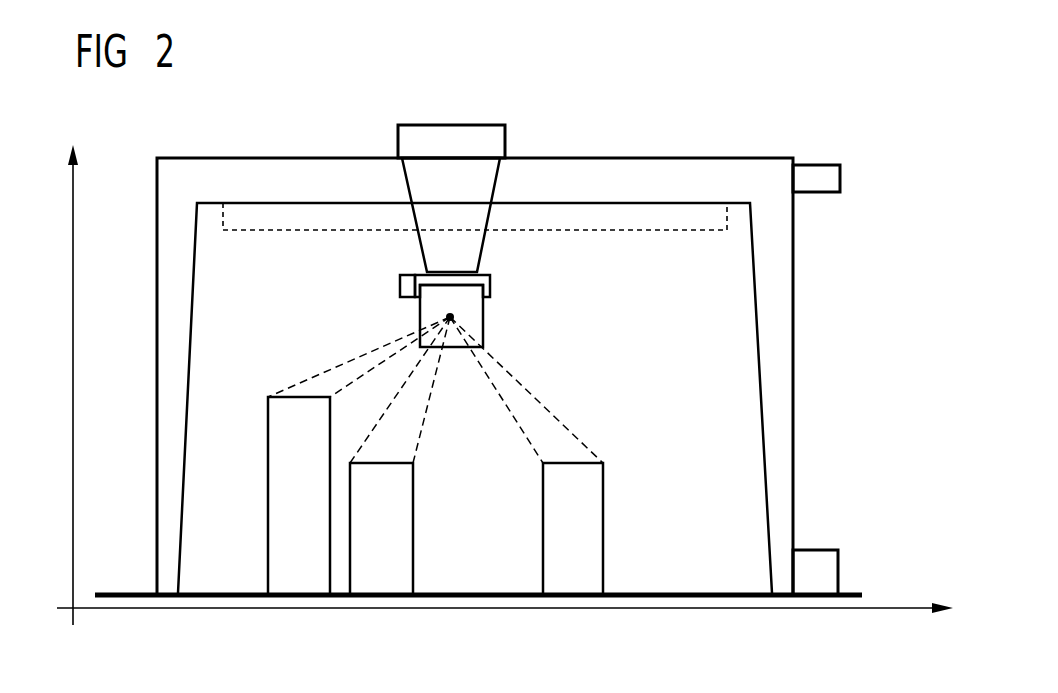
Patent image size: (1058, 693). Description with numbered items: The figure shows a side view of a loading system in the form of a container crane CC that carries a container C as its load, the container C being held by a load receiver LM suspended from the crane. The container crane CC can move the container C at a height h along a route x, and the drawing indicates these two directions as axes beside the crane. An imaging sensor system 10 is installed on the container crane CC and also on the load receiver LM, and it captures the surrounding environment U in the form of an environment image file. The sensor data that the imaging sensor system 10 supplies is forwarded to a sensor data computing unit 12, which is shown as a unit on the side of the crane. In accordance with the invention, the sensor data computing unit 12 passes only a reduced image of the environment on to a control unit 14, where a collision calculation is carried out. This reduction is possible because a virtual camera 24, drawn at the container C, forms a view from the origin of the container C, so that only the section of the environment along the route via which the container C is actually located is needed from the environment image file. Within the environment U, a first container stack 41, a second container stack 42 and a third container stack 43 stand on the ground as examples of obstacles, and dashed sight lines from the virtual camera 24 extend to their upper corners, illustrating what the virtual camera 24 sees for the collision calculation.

The imaging sensor system 10 is at (240, 217).
The sensor data computing unit 12 is at (812, 165).
The control unit 14 is at (812, 550).
The virtual camera 24 is at (447, 316).
The first container stack 41 is at (300, 597).
The second container stack 42 is at (383, 597).
The third container stack 43 is at (573, 597).
The container crane CC is at (612, 157).
The load receiver LM is at (492, 297).
The container C is at (483, 313).
The environment U is at (672, 362).
The height h is at (72, 252).
The route x is at (902, 610).